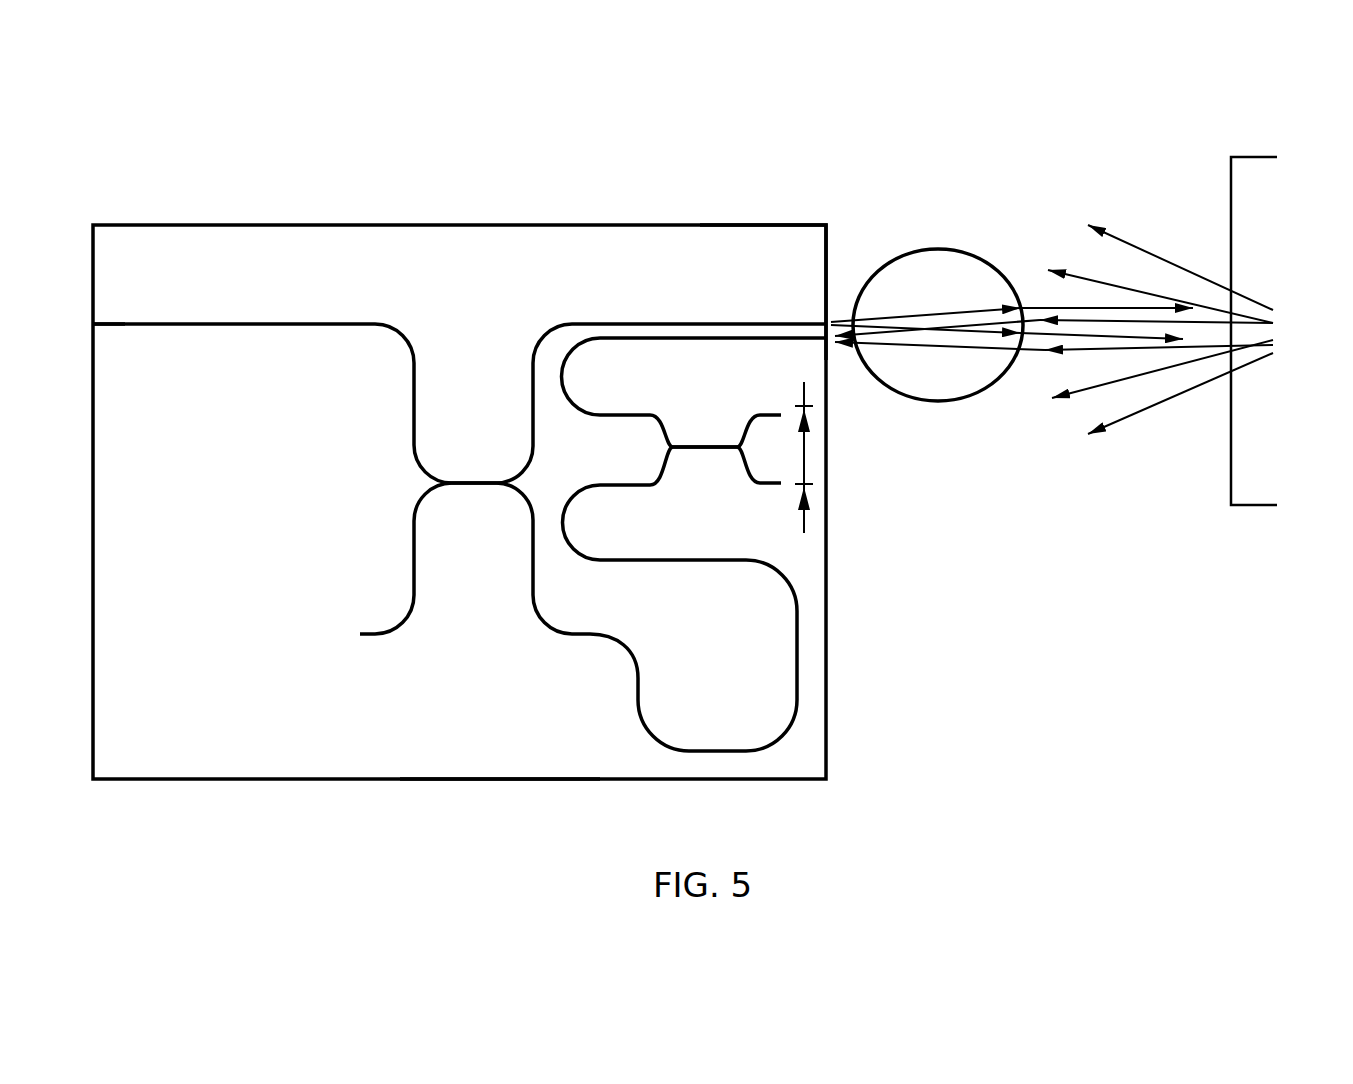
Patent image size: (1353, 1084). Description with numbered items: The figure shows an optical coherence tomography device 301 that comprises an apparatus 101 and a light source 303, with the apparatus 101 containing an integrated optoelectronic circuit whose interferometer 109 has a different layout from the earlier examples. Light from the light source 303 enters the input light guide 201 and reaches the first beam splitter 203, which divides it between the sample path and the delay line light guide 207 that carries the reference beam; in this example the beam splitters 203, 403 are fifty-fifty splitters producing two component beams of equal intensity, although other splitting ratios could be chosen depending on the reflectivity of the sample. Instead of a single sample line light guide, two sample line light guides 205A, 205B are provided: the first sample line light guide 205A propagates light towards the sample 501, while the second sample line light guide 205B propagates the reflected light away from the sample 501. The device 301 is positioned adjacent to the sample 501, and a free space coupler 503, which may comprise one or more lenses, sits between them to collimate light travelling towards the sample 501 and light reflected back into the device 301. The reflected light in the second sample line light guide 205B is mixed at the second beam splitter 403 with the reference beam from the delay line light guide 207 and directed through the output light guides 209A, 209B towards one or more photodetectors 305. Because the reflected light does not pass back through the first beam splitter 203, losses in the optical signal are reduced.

The apparatus 101 is at (447, 238).
The interferometer 109 is at (473, 758).
The input light guide 201 is at (308, 322).
The beam splitter 203 is at (465, 480).
The first sample line light guide 205A is at (683, 323).
The second sample line light guide 205B is at (675, 340).
The delay line light guide 207 is at (637, 666).
The output light guide 209A is at (762, 413).
The output light guide 209B is at (763, 485).
The optical coherence tomography device 301 is at (685, 222).
The light source 303 is at (97, 322).
The photodetector 305 is at (812, 393).
The beam splitter 403 is at (712, 450).
The sample 501 is at (1250, 157).
The free space coupler 503 is at (932, 400).